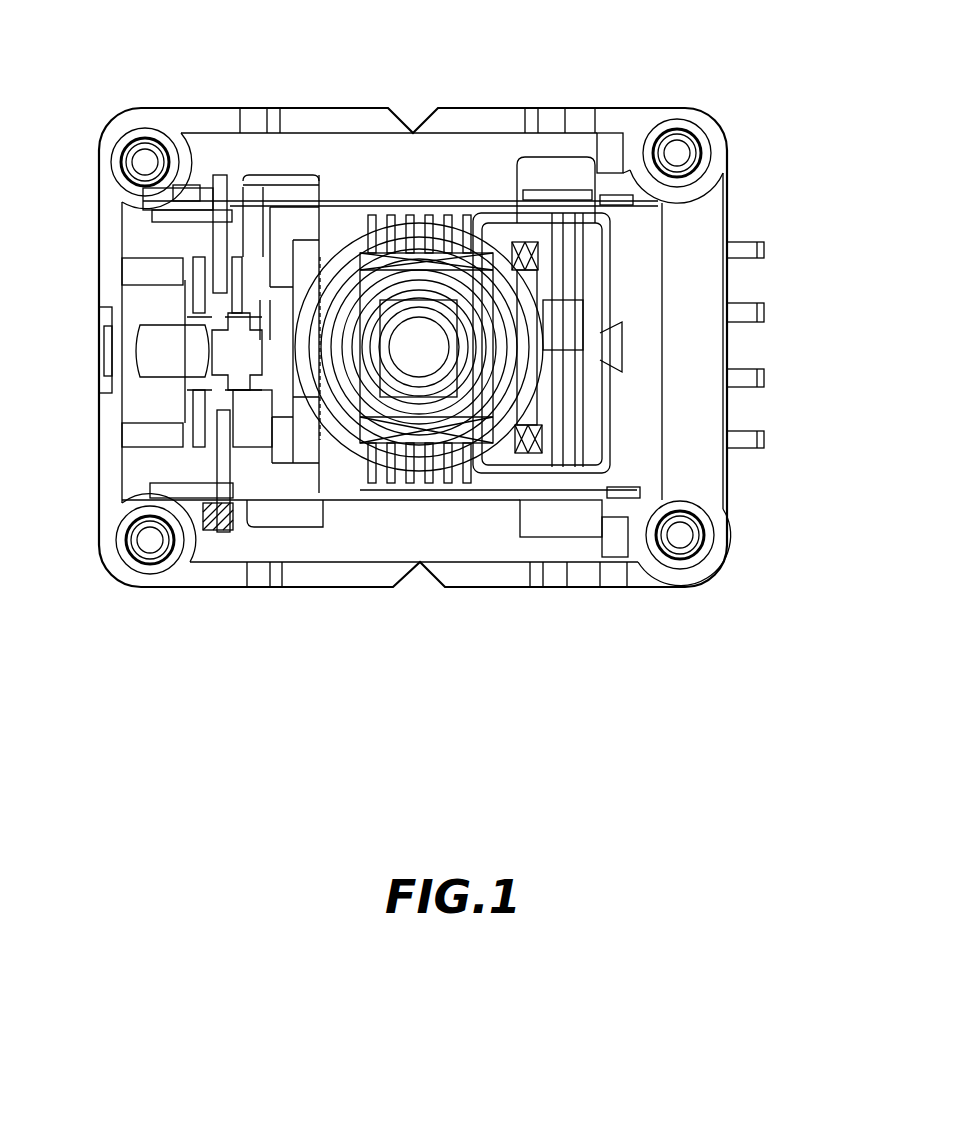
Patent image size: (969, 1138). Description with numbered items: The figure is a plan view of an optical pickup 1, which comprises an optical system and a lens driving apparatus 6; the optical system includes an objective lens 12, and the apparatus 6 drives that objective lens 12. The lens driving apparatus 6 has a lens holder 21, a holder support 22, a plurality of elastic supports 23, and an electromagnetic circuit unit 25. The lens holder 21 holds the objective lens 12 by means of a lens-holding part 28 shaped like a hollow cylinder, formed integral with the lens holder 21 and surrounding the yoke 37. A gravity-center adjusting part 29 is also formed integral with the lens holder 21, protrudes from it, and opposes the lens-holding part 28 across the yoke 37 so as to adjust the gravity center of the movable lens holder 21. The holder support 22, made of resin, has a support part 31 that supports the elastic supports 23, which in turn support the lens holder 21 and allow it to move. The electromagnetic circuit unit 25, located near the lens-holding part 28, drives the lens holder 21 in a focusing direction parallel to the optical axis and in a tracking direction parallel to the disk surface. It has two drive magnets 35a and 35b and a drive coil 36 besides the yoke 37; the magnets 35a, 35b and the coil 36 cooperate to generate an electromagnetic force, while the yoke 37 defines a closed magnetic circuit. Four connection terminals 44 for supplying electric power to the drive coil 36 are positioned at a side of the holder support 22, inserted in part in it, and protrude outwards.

The optical pickup 1 is at (718, 610).
The lens driving apparatus 6 is at (498, 163).
The objective lens 12 is at (398, 378).
The lens holder 21 is at (487, 500).
The holder support 22 is at (371, 148).
The elastic supports 23 is at (303, 128).
The electromagnetic circuit unit 25 is at (608, 252).
The lens-holding part 28 is at (438, 483).
The gravity-center adjusting part 29 is at (647, 403).
The support part 31 is at (140, 468).
The drive magnet 35a is at (560, 317).
The drive magnet 35b is at (490, 252).
The drive coil 36 is at (533, 238).
The yoke 37 is at (507, 480).
The connection terminals 44 is at (764, 250).